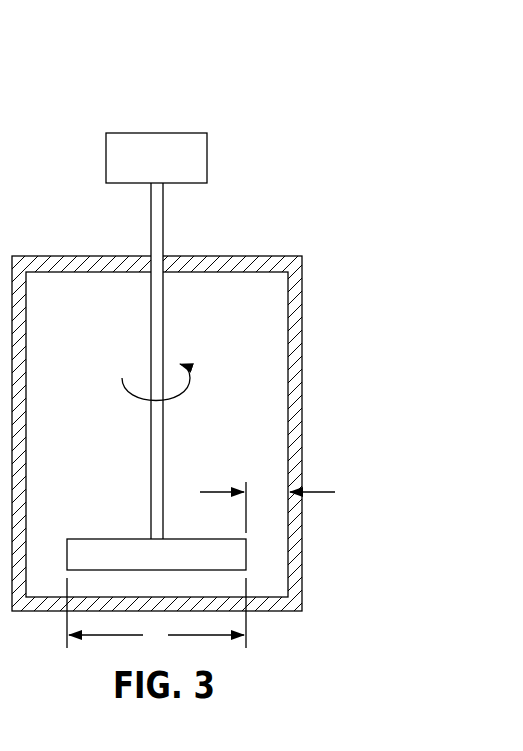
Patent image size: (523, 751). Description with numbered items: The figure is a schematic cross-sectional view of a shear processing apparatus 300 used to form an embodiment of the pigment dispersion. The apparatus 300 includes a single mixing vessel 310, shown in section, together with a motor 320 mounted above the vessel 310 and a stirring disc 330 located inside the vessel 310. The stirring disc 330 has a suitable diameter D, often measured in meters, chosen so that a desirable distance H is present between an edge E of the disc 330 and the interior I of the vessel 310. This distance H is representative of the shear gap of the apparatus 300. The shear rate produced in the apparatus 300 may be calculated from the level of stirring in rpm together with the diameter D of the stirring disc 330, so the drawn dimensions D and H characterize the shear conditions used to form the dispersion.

The shear processing apparatus 300 is at (264, 114).
The mixing vessel 310 is at (245, 257).
The motor 320 is at (207, 158).
The stirring disc 330 is at (103, 553).
The distance H is at (267, 506).
The diameter D is at (156, 613).
The edge E is at (246, 560).
The interior I is at (292, 529).